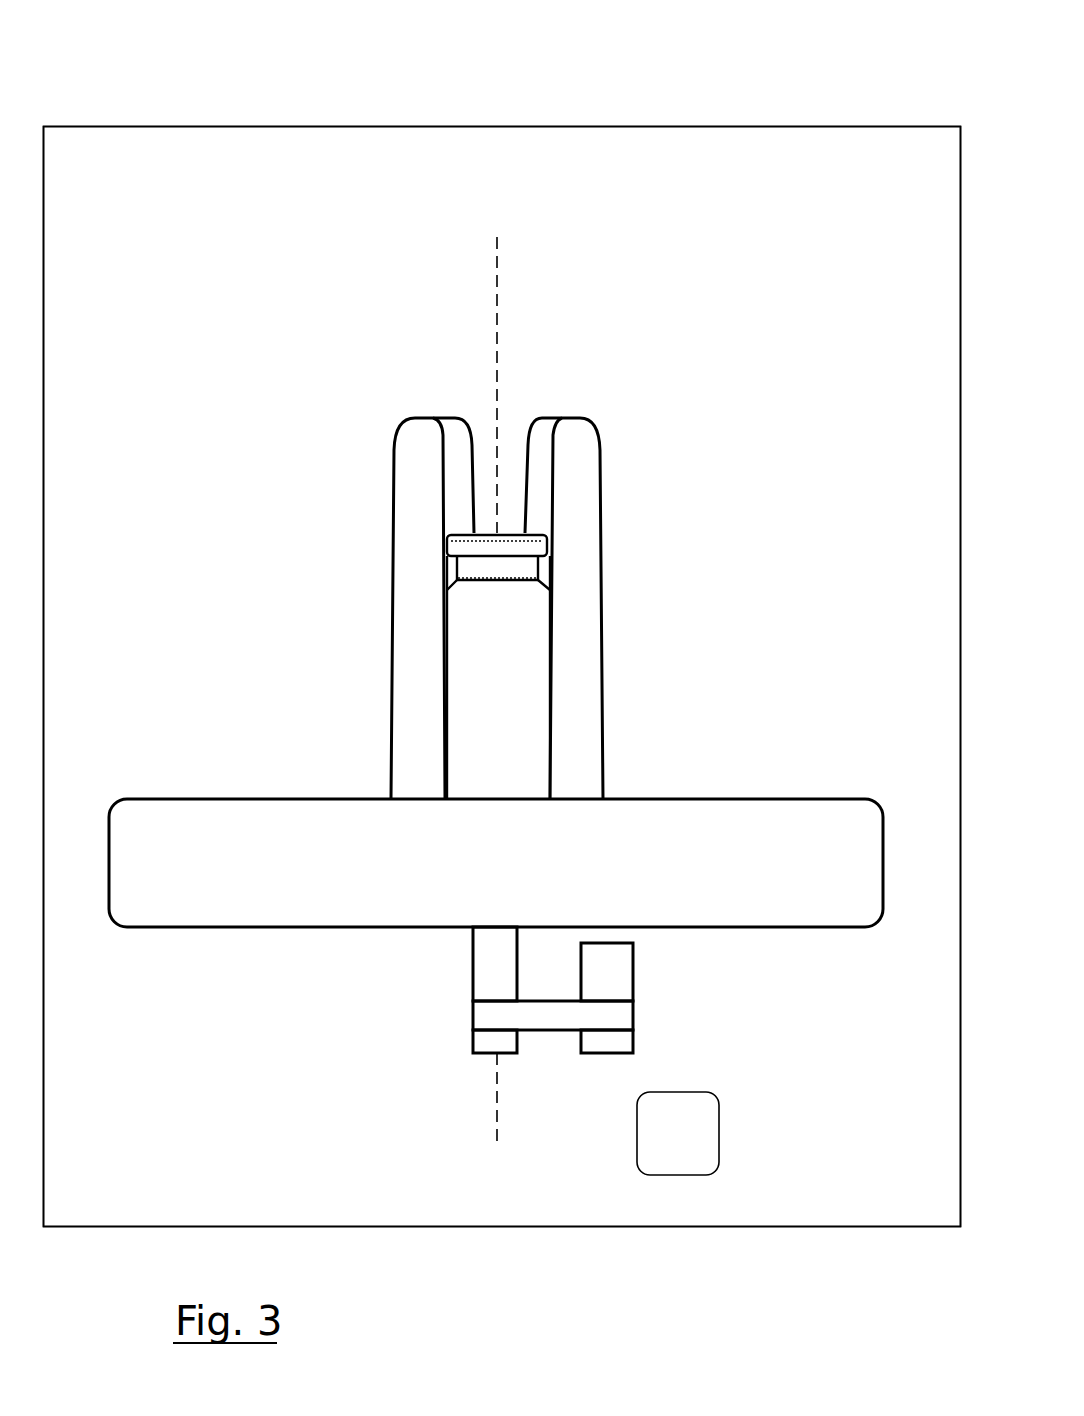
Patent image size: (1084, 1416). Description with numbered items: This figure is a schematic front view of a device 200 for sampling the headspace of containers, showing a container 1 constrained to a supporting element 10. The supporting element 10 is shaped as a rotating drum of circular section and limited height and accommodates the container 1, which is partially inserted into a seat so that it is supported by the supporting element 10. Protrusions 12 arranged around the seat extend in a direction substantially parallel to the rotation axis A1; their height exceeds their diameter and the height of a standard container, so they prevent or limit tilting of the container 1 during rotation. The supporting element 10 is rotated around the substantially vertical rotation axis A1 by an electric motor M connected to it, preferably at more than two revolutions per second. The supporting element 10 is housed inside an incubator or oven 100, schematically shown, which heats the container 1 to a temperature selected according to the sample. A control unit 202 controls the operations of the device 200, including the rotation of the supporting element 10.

The device 200 is at (648, 108).
The incubator or oven 100 is at (613, 1228).
The rotation axis A1 is at (498, 282).
The supporting element 10 is at (245, 823).
The protrusions 12 is at (450, 432).
The container 1 is at (487, 642).
The electric motor M is at (612, 984).
The control unit 202 is at (690, 1157).